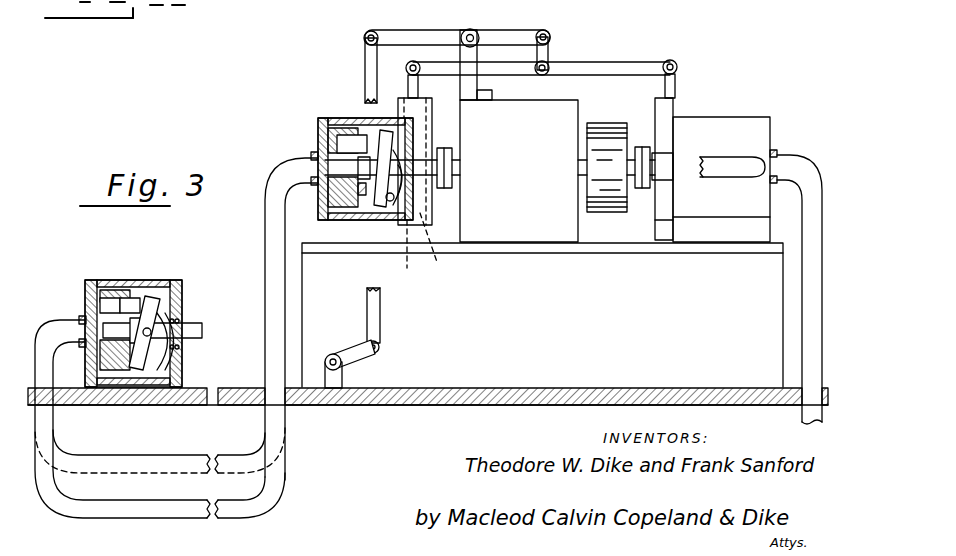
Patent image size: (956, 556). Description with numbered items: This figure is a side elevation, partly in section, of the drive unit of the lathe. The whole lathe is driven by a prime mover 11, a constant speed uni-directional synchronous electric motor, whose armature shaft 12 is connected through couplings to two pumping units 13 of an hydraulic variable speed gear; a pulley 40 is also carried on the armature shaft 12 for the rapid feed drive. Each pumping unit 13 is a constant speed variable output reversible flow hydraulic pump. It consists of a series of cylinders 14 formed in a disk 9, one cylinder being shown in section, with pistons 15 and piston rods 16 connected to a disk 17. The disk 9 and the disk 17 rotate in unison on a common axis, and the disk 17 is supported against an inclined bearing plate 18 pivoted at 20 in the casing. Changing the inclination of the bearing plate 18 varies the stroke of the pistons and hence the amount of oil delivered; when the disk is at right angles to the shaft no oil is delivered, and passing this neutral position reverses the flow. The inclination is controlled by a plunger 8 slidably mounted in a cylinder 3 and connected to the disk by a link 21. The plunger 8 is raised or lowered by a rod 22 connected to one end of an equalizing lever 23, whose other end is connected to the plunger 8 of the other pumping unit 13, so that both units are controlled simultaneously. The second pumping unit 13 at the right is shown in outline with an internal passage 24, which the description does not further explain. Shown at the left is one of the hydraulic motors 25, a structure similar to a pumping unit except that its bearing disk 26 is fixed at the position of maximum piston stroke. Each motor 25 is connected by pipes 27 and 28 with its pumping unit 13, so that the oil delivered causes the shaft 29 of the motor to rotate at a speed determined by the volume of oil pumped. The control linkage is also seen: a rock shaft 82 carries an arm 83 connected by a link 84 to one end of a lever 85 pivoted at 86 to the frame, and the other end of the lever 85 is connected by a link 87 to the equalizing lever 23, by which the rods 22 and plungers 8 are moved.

The cylinder 3 is at (427, 112).
The plunger 8 is at (430, 245).
The disk 9 is at (343, 205).
The prime mover 11 is at (519, 166).
The armature shaft 12 is at (447, 190).
The pumping unit 13 is at (313, 140).
The cylinder 14 is at (338, 140).
The piston 15 is at (357, 142).
The piston rod 16 is at (370, 143).
The disk 17 is at (378, 155).
The inclined bearing plate 18 is at (383, 210).
The pivot 20 is at (418, 162).
The link 21 is at (407, 253).
The rod 22 is at (413, 60).
The equalizing lever 23 is at (598, 66).
The discharge passage 24 is at (725, 170).
The hydraulic motor 25 is at (162, 312).
The bearing disk 26 is at (170, 285).
The pipe 27 is at (170, 512).
The pipe 28 is at (135, 462).
The shaft 29 is at (200, 325).
The pulley 40 is at (590, 124).
The rock shaft 82 is at (333, 372).
The arm 83 is at (350, 360).
The link 84 is at (368, 57).
The lever 85 is at (508, 32).
The pivot 86 is at (470, 28).
The link 87 is at (548, 52).